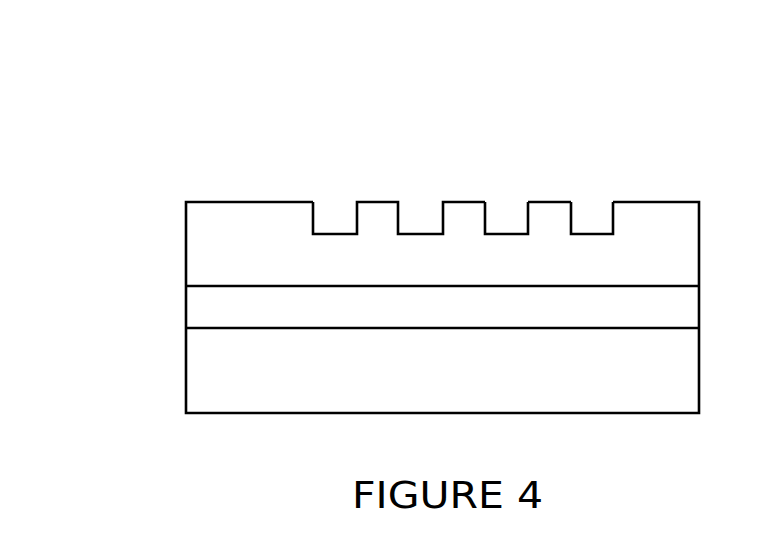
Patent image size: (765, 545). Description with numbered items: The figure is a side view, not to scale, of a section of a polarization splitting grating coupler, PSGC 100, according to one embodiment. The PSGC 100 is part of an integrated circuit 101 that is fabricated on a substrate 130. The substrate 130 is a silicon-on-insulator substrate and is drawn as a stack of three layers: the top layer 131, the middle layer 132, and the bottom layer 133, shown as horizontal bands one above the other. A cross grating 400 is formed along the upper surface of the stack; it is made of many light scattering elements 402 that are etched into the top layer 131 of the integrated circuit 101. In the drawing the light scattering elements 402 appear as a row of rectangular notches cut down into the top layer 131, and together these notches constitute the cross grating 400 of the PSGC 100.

The PSGC 100 is at (378, 85).
The integrated circuit 101 is at (141, 239).
The substrate 130 is at (141, 307).
The top layer 131 is at (263, 256).
The layer 132 is at (261, 318).
The layer 133 is at (261, 382).
The cross grating 400 is at (344, 168).
The light scattering elements 402 is at (514, 193).